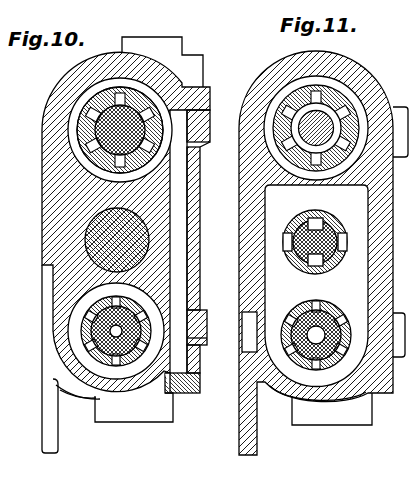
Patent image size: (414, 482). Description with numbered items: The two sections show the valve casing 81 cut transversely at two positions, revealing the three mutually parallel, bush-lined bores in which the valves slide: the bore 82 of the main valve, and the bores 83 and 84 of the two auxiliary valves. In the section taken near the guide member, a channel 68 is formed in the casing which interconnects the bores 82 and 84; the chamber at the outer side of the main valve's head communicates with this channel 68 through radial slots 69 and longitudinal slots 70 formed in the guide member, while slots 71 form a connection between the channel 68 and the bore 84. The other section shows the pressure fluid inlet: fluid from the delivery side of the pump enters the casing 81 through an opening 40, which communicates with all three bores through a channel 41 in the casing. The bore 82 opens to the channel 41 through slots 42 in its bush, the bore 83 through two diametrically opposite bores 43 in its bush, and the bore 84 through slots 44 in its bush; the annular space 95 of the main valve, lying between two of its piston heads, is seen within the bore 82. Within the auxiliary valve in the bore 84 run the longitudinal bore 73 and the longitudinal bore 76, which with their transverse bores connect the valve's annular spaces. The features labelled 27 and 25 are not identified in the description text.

In FIG. 10, the channel 68 is at (72, 80).
In FIG. 10, the radial slots 69 is at (127, 82).
In FIG. 10, the longitudinal slots 70 is at (124, 98).
In FIG. 10, the casing 81 is at (88, 88).
In FIG. 11, the casing 81 is at (306, 60).
In FIG. 10, the bore 82 is at (86, 104).
In FIG. 11, the bore 82 is at (305, 110).
In FIG. 10, the bore 83 is at (86, 240).
In FIG. 11, the bore 83 is at (291, 243).
In FIG. 10, the bore 84 is at (85, 331).
In FIG. 11, the bore 84 is at (283, 333).
In FIG. 10, the longitudinal bore 73 is at (92, 342).
In FIG. 10, the shell 27 is at (70, 388).
In FIG. 10, the slots 71 is at (94, 395).
In FIG. 11, the channel 41 is at (290, 82).
In FIG. 11, the slots 42 is at (322, 92).
In FIG. 11, the annular space 95 is at (332, 100).
In FIG. 11, the bores 43 is at (286, 238).
In FIG. 11, the key slot 25 is at (320, 224).
In FIG. 11, the slots 44 is at (318, 306).
In FIG. 11, the opening 40 is at (243, 323).
In FIG. 11, the longitudinal bore 76 is at (303, 365).